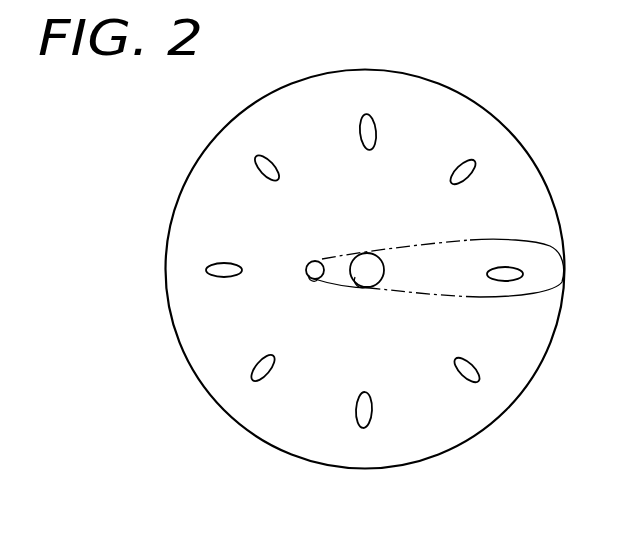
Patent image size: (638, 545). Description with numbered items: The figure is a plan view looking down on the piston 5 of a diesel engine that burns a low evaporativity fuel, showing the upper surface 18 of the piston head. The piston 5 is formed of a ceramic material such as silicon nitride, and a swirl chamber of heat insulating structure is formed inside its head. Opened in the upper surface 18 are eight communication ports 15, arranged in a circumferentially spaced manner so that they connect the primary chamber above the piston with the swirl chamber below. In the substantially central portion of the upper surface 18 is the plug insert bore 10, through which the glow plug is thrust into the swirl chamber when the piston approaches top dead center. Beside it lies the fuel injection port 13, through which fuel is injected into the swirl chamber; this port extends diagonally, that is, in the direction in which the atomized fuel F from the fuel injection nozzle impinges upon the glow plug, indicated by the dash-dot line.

The piston 5 is at (545, 169).
The plug insert bore 10 is at (365, 286).
The fuel injection port 13 is at (318, 280).
The communication ports 15 is at (372, 131).
The upper surface 18 is at (513, 362).
The atomized fuel F is at (418, 292).